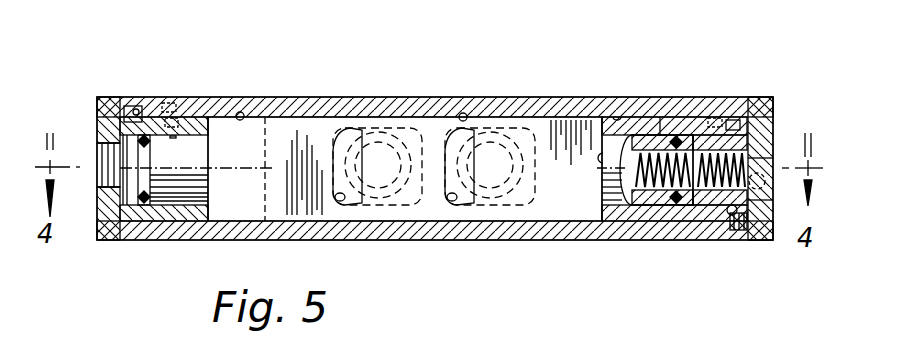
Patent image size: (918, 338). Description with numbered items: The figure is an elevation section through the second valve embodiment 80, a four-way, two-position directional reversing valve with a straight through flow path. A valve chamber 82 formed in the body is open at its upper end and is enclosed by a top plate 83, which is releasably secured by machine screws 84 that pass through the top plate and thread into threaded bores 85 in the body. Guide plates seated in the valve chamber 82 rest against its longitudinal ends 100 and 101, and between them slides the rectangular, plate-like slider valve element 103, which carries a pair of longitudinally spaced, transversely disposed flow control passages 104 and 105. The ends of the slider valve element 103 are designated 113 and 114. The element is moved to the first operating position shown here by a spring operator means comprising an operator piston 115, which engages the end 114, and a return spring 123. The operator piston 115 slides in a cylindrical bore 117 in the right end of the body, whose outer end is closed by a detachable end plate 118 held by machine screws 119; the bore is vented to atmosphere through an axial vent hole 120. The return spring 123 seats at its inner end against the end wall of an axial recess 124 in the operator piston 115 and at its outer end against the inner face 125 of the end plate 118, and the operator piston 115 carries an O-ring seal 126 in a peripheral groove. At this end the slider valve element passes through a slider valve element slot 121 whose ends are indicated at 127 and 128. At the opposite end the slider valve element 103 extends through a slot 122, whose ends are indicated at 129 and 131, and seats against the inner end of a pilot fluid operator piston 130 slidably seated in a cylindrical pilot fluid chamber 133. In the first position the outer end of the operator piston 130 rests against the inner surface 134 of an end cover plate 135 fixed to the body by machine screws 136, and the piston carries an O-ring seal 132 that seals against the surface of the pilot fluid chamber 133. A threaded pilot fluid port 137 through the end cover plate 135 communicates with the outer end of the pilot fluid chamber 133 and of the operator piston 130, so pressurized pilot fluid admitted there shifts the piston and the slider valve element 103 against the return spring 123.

The valve 80 is at (300, 84).
The valve chamber 82 is at (466, 112).
The top plate 83 is at (537, 110).
The machine screws 84 is at (170, 108).
The threaded bores 85 is at (205, 164).
The longitudinal end of valve chamber 100 is at (267, 217).
The longitudinal end of valve chamber 101 is at (593, 220).
The slider valve element 103 is at (437, 124).
The flow control passage 104 is at (347, 203).
The flow control passage 105 is at (447, 203).
The end of slider valve element 113 is at (205, 168).
The end of slider valve element 114 is at (592, 166).
The operator piston 115 is at (616, 200).
The cylindrical bore 117 is at (752, 137).
The end plate 118 is at (758, 115).
The machine screws 119 is at (770, 110).
The axial vent hole 120 is at (755, 182).
The slider valve element slot 121 is at (639, 130).
The slider valve element slot 122 is at (242, 112).
The return spring 123 is at (712, 185).
The axial recess 124 is at (655, 135).
The inner face of end plate 125 is at (773, 242).
The O-ring seal 126 is at (676, 200).
The end of slot 127 is at (613, 115).
The end of slot 128 is at (652, 215).
The end of slot 129 is at (215, 212).
The pilot fluid operator piston 130 is at (177, 192).
The end of slot 131 is at (262, 170).
The O-ring seal 132 is at (167, 212).
The pilot fluid chamber 133 is at (205, 140).
The inner surface of end cover plate 134 is at (133, 115).
The end cover plate 135 is at (108, 97).
The machine screws 136 is at (97, 108).
The pilot fluid port 137 is at (110, 182).